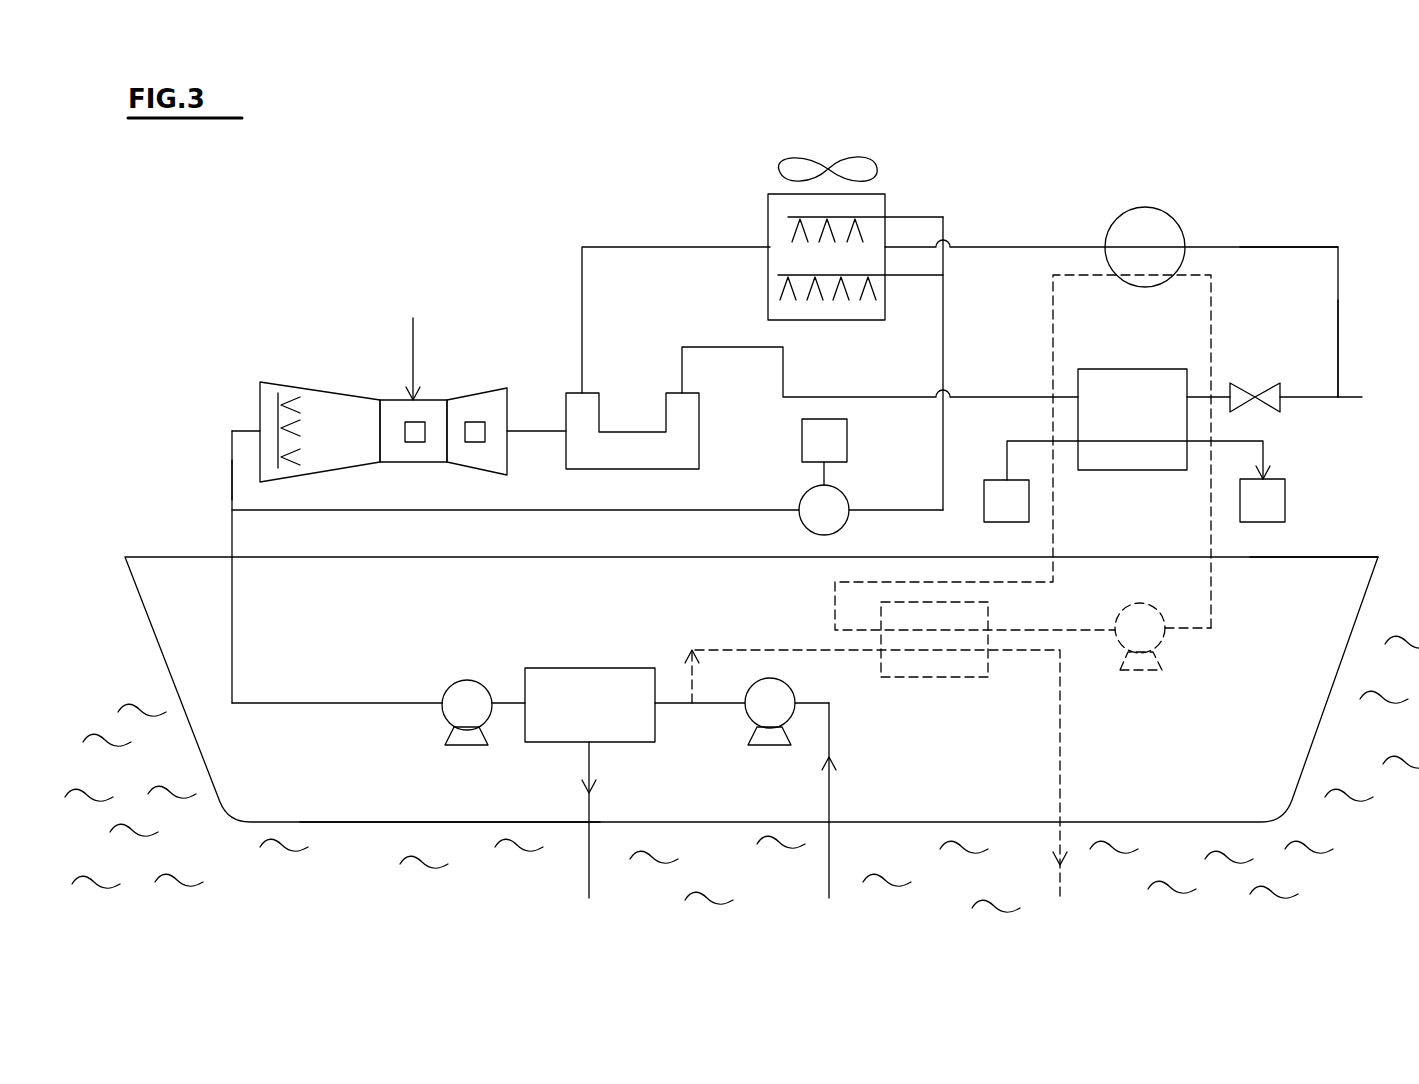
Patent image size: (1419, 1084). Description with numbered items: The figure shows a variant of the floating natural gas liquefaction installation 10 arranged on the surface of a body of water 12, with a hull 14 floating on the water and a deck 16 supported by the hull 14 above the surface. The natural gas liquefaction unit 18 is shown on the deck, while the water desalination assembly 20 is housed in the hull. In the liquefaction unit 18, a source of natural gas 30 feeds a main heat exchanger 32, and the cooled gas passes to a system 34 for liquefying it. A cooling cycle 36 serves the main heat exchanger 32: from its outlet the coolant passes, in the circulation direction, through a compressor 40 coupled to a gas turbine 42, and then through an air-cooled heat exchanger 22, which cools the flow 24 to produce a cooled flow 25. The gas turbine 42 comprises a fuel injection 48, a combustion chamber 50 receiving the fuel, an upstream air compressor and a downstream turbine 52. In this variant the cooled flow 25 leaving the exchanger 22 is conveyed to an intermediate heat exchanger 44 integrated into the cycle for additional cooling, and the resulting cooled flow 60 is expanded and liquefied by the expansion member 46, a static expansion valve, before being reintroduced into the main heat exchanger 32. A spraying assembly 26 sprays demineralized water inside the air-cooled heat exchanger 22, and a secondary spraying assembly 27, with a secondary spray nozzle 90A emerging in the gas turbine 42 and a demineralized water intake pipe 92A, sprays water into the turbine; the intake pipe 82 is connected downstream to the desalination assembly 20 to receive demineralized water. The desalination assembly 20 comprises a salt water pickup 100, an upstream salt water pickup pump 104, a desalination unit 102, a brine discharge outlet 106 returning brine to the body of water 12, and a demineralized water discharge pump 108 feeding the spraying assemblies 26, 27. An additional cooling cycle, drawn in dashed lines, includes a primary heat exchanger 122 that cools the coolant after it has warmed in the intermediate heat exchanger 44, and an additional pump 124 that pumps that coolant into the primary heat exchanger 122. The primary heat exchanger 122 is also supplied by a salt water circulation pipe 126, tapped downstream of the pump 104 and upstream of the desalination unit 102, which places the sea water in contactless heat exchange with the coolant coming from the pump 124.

The natural gas liquefaction installation 10 is at (238, 280).
The body of water 12 is at (742, 774).
The hull 14 is at (170, 665).
The deck 16 is at (1328, 556).
The natural gas liquefaction unit 18 is at (1355, 242).
The water desalination assembly 20 is at (398, 810).
The air-cooled heat exchanger 22 is at (880, 150).
The flow 24 is at (680, 247).
The cooled flow 25 is at (1045, 247).
The spraying assembly 26 is at (933, 202).
The secondary spraying assembly 27 is at (210, 450).
The source of natural gas 30 is at (997, 492).
The main heat exchanger 32 is at (1152, 378).
The system for liquefying cooled natural gas 34 is at (1284, 485).
The cooling cycle 36 is at (565, 262).
The compressor 40 is at (632, 440).
The gas turbine 42 is at (325, 388).
The intermediate heat exchanger 44 is at (1125, 228).
The expansion member 46 is at (1268, 388).
The fuel injection 48 is at (427, 352).
The combustion chamber 50 is at (409, 428).
The downstream turbine 52 is at (475, 427).
The cooled flow 60 is at (1262, 247).
The intake pipe 82 is at (731, 510).
The secondary spray nozzle 90A is at (290, 401).
The demineralized water intake pipe 92A is at (232, 476).
The salt water pickup 100 is at (829, 882).
The desalination unit 102 is at (615, 688).
The upstream salt water pickup pump 104 is at (775, 722).
The brine discharge outlet 106 is at (589, 852).
The demineralized water discharge pump 108 is at (457, 698).
The primary heat exchanger 122 is at (933, 677).
The additional pump 124 is at (1136, 664).
The salt water circulation pipe 126 is at (748, 650).